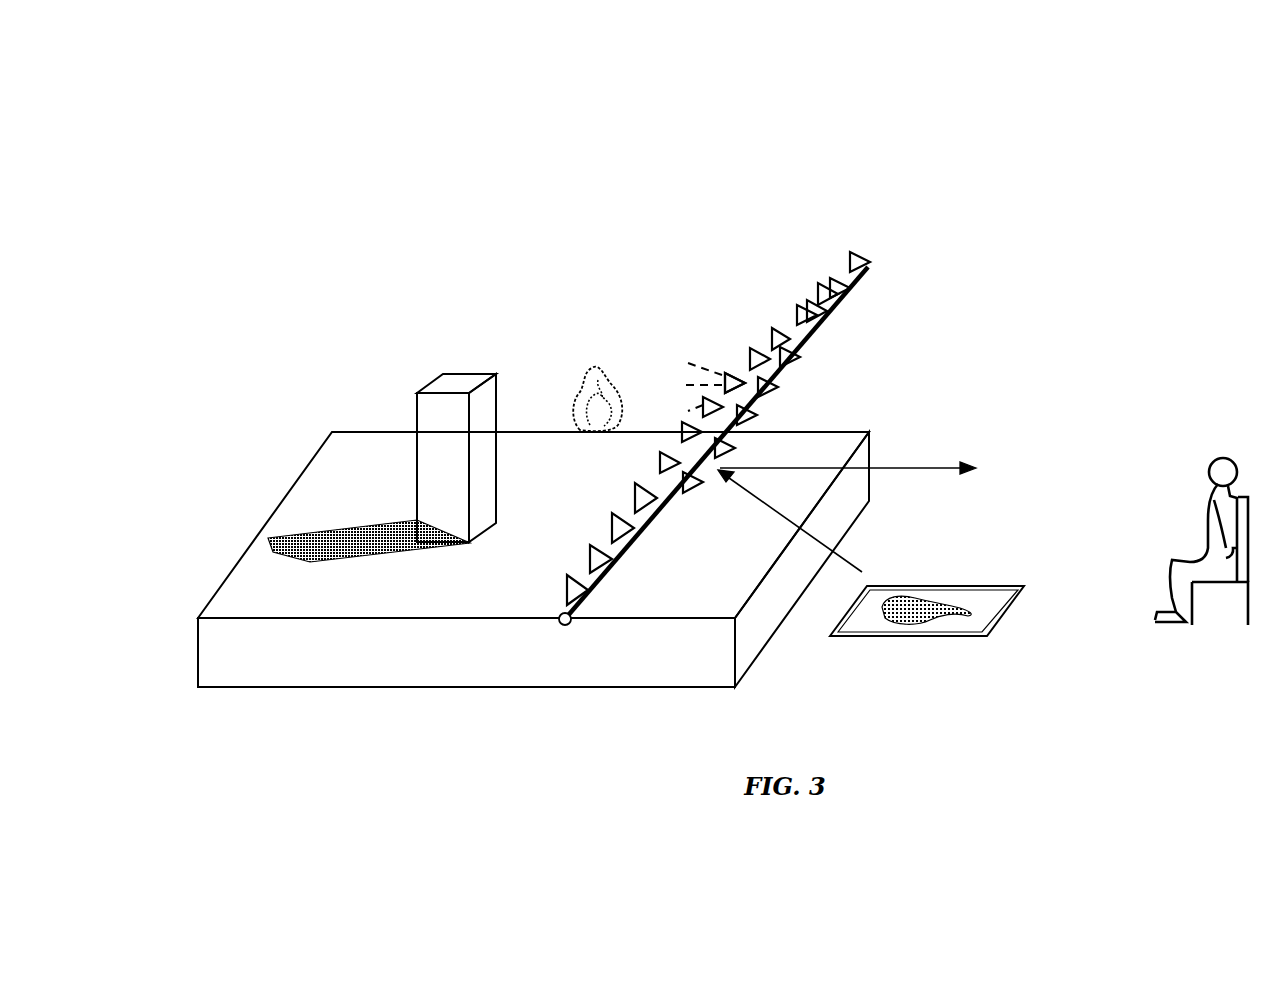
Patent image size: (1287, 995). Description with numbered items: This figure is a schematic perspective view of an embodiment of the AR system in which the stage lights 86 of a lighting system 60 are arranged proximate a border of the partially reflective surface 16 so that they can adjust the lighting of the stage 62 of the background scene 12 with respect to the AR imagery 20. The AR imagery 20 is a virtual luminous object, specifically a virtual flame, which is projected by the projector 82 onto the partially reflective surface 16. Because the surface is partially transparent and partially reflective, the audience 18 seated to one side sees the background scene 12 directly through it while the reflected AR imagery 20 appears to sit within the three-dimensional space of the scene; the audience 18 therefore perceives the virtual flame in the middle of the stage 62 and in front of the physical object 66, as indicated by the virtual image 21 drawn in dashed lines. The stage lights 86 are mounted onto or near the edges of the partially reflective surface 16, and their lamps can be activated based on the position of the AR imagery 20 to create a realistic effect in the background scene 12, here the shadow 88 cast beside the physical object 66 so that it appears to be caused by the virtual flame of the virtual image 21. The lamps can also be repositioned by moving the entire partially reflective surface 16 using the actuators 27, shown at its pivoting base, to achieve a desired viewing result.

The background scene 12 is at (374, 262).
The lighting system 60 is at (906, 232).
The stage lights 86 is at (726, 328).
The partially reflective surface 16 is at (790, 367).
The virtual image 21 is at (598, 370).
The physical object 66 is at (470, 380).
The shadow 88 is at (338, 526).
The stage 62 is at (268, 526).
The actuators 27 is at (565, 627).
The AR imagery 20 is at (922, 600).
The projector 82 is at (1000, 614).
The audience 18 is at (1232, 460).